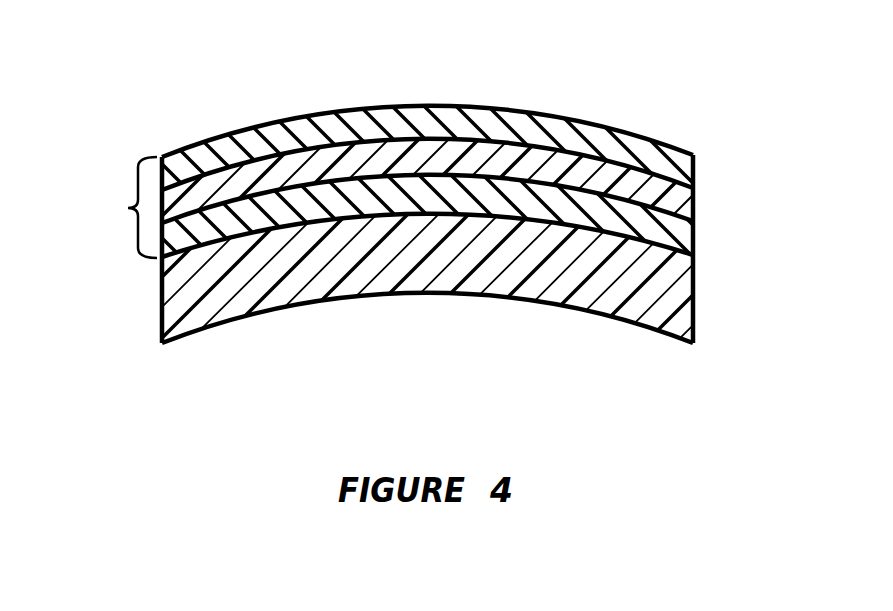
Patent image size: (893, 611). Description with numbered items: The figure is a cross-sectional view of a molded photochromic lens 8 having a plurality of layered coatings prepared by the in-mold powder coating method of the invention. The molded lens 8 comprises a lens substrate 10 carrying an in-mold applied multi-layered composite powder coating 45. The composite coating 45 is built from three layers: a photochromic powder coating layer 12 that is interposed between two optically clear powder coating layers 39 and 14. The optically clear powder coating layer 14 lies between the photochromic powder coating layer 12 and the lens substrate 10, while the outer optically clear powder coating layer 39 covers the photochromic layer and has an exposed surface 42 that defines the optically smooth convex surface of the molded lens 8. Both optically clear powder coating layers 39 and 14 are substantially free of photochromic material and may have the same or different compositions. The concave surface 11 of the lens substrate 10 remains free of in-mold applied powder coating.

The molded lens 8 is at (137, 417).
The lens substrate 10 is at (420, 283).
The concave surface 11 is at (607, 317).
The photochromic powder coating layer 12 is at (693, 211).
The optically clear powder coating layer 14 is at (693, 240).
The optically clear powder coating layer 39 is at (650, 160).
The exposed surface 42 is at (345, 109).
The multi-layered composite powder coating 45 is at (128, 208).